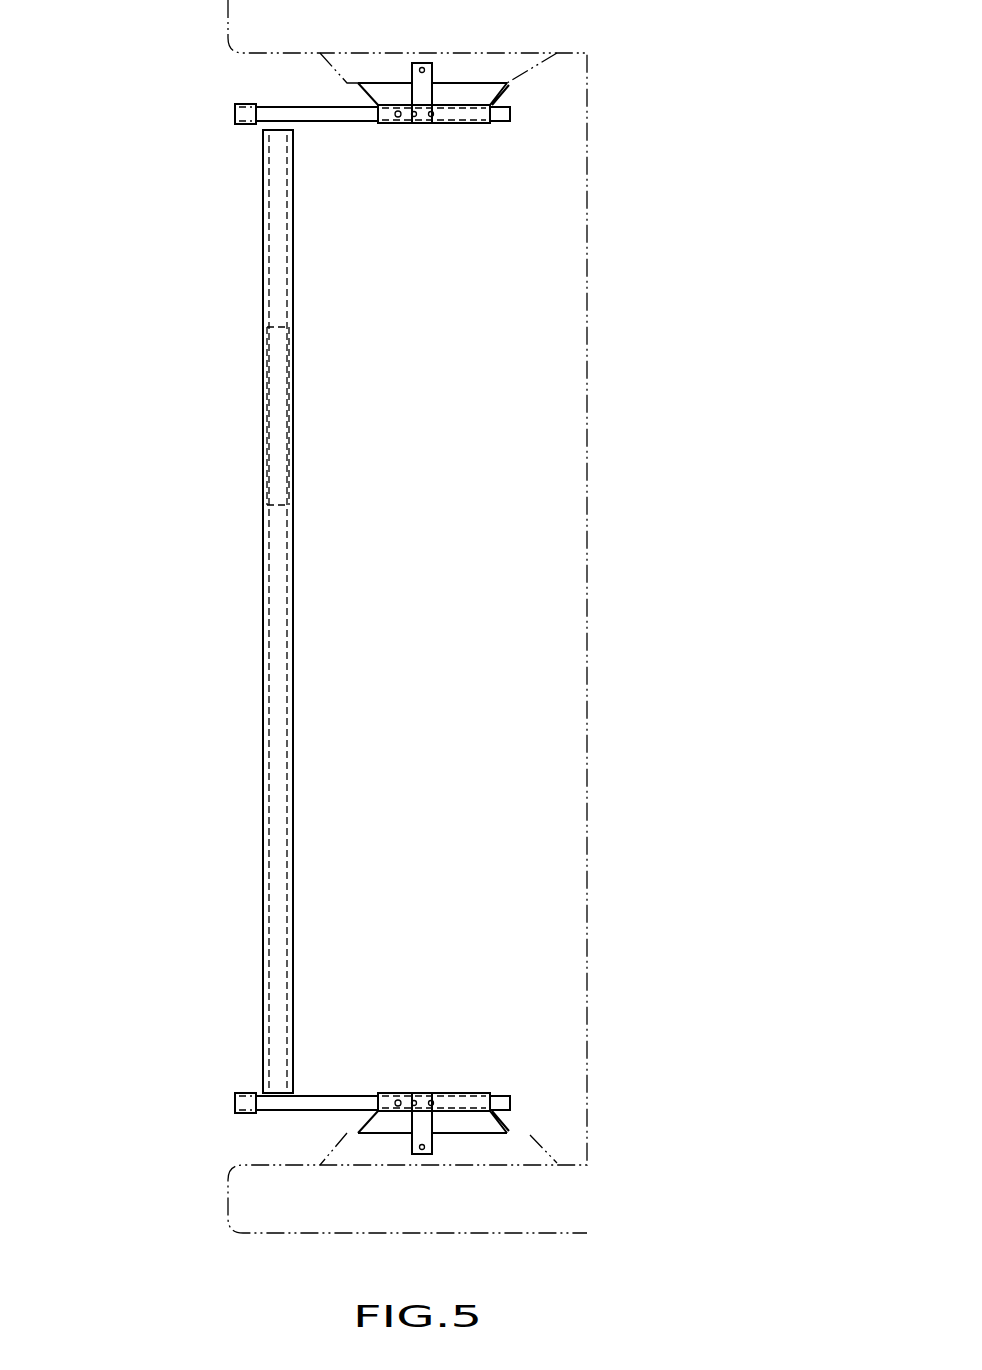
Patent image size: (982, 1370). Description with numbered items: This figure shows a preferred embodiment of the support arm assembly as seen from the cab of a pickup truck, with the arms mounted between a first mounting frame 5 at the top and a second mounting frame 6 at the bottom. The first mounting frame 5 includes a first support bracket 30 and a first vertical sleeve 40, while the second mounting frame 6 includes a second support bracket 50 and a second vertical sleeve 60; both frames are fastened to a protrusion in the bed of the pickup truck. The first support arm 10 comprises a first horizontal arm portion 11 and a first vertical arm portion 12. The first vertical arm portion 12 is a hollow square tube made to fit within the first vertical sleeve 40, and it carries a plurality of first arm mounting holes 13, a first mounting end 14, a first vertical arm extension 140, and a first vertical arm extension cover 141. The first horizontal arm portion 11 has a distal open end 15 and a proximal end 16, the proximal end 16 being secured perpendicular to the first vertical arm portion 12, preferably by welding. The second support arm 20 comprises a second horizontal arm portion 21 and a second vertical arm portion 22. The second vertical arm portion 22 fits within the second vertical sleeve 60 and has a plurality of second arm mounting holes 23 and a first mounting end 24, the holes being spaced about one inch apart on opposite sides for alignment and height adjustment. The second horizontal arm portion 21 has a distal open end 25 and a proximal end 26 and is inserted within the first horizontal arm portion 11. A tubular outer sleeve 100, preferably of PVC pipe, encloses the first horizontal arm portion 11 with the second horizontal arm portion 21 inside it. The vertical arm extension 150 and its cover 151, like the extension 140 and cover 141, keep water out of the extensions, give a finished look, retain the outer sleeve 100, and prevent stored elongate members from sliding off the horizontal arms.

The first mounting frame 5 is at (505, 93).
The second mounting frame 6 is at (505, 1122).
The first support arm 10 is at (386, 148).
The first horizontal arm portion 11 is at (292, 272).
The first vertical arm portion 12 is at (305, 123).
The first arm mounting holes 13 is at (400, 118).
The first mounting end 14 is at (500, 120).
The distal, open end 15 is at (282, 505).
The proximal end 16 is at (291, 131).
The second support arm 20 is at (385, 1073).
The second horizontal arm portion 21 is at (285, 665).
The second vertical arm portion 22 is at (305, 1093).
The second arm mounting holes 23 is at (398, 1100).
The first mounting end 24 is at (502, 1102).
The distal, open end 25 is at (286, 328).
The proximal end 26 is at (293, 1090).
The first support bracket 30 is at (453, 82).
The first vertical sleeve 40 is at (514, 196).
The second support bracket 50 is at (454, 1138).
The second vertical sleeve 60 is at (513, 1023).
The outer sleeve 100 is at (263, 275).
The first vertical arm extension 140 is at (256, 105).
The first vertical arm extension cover 141 is at (236, 117).
The vertical arm extension 150 is at (260, 1107).
The vertical arm extension cover 151 is at (237, 1096).